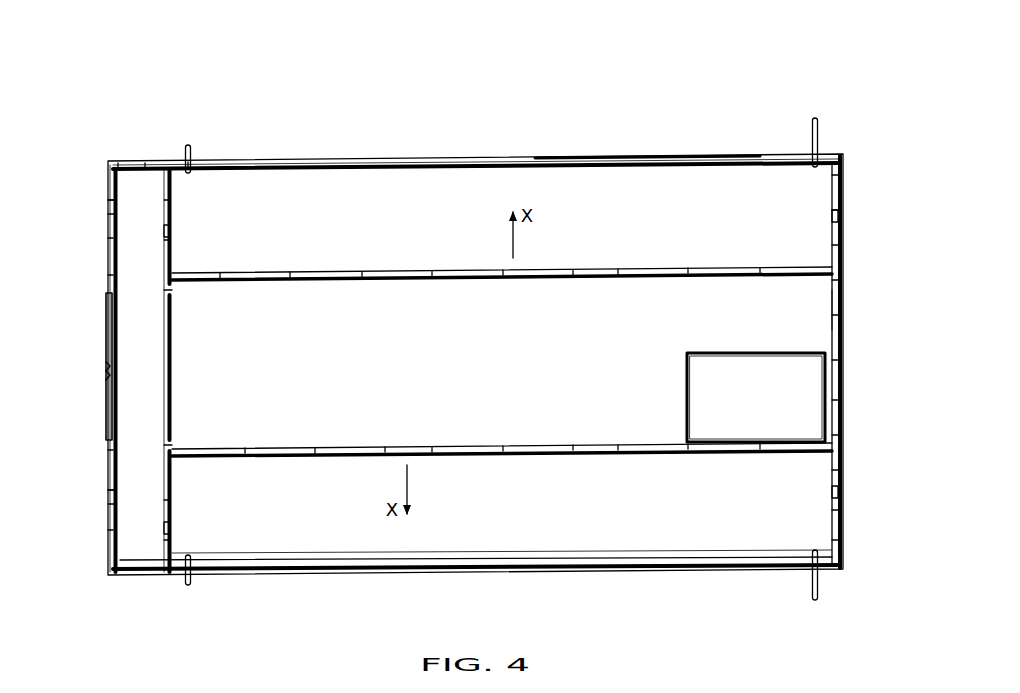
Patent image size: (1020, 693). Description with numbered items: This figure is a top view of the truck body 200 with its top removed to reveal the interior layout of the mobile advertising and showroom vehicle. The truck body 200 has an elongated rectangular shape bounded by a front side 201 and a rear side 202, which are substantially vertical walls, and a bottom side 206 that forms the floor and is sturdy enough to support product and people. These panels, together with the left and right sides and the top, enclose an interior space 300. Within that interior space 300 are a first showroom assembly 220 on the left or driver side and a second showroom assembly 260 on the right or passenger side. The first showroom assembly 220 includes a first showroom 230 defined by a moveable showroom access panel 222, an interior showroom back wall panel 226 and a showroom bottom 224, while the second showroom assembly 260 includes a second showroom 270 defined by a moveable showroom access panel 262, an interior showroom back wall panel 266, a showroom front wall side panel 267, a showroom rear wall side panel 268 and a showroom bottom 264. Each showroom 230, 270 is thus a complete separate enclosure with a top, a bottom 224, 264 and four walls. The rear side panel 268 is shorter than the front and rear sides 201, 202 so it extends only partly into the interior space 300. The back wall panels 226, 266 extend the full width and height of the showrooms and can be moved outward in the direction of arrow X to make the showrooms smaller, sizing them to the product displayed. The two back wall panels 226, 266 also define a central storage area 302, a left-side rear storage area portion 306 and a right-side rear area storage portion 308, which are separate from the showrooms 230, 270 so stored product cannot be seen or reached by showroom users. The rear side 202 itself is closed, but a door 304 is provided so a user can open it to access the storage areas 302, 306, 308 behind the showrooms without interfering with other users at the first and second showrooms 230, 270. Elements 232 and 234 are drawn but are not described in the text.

The truck body 200 is at (150, 98).
The front side 201 is at (843, 250).
The rear side 202 is at (110, 256).
The bottom side 206 is at (805, 308).
The first showroom assembly 220 is at (832, 152).
The moveable showroom access panel 222 is at (482, 157).
The showroom bottom 224 is at (502, 220).
The interior showroom back wall panel 226 is at (474, 270).
The first showroom 230 is at (290, 205).
The upper right latch 232 is at (832, 216).
The upper left latch 234 is at (172, 230).
The second showroom assembly 260 is at (843, 525).
The moveable showroom access panel 262 is at (346, 572).
The showroom bottom 264 is at (502, 508).
The interior showroom back wall panel 266 is at (322, 458).
The showroom front wall side panel 267 is at (832, 484).
The showroom rear wall side panel 268 is at (172, 528).
The second showroom 270 is at (676, 525).
The interior space 300 is at (843, 352).
The central storage area 302 is at (502, 362).
The door 304 is at (110, 375).
The left-side rear storage area portion 306 is at (130, 208).
The right-side rear area storage portion 308 is at (130, 497).